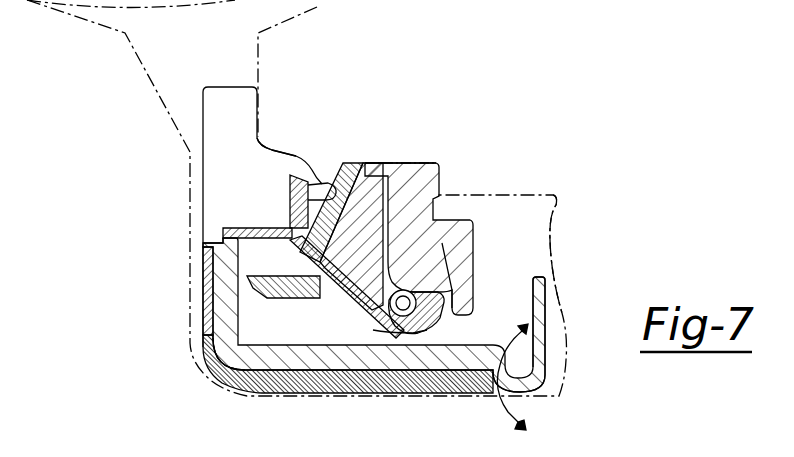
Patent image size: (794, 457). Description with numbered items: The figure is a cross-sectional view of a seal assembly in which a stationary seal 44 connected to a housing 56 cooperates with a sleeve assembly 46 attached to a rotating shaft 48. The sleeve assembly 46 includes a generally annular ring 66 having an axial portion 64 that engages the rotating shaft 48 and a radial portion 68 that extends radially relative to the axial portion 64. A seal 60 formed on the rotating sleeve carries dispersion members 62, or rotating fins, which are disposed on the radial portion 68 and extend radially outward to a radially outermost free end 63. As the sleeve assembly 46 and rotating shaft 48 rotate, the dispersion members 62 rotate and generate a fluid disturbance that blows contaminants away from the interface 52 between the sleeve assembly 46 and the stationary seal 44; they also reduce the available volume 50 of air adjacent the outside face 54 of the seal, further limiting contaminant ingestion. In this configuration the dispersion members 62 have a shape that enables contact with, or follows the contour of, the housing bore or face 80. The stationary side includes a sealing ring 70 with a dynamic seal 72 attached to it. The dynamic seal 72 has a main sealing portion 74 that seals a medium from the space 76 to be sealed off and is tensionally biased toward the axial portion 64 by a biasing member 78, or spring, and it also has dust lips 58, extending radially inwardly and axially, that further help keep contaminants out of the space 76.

The stationary seal 44 is at (378, 150).
The sleeve assembly 46 is at (233, 352).
The rotating shaft 48 is at (555, 428).
The available volume 50 is at (235, 63).
The interface 52 is at (302, 268).
The outside face 54 is at (335, 168).
The housing 56 is at (538, 162).
The dust lips 58 is at (347, 243).
The seal 60 is at (208, 297).
The dispersion members 62 is at (283, 195).
The radially outermost free end 63 is at (230, 88).
The axial portion 64 is at (390, 357).
The annular ring 66 is at (290, 360).
The radial portion 68 is at (203, 240).
The sealing ring 70 is at (413, 163).
The dynamic seal 72 is at (440, 312).
The main sealing portion 74 is at (413, 333).
The space to be sealed off 76 is at (413, 285).
The biasing member 78 is at (445, 300).
The housing bore or face 80 is at (261, 143).